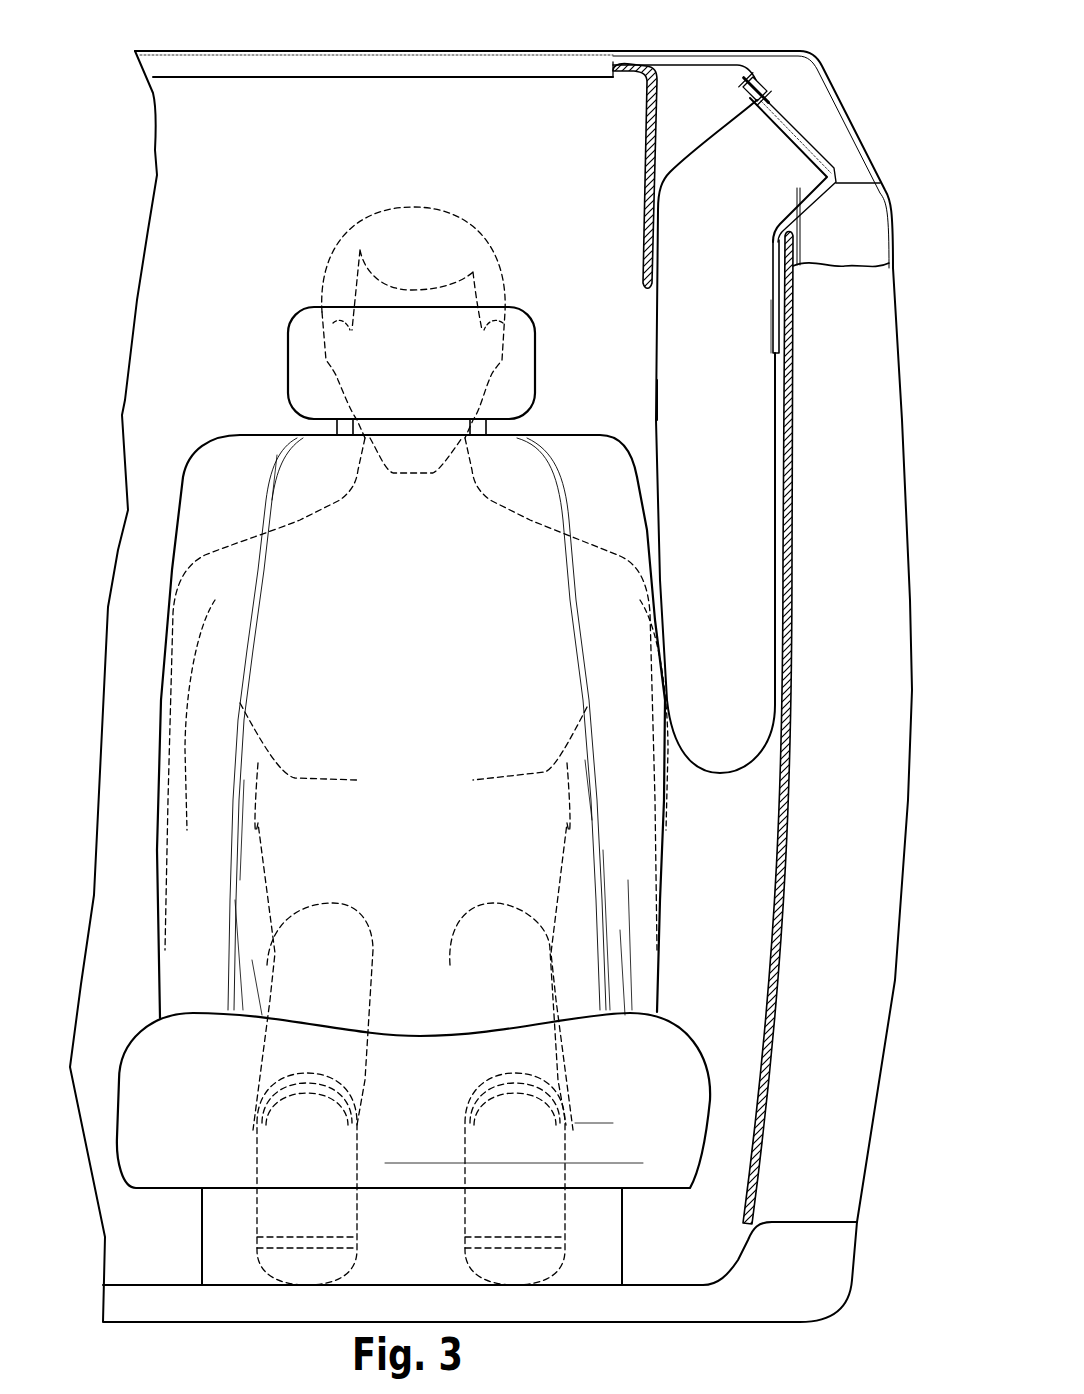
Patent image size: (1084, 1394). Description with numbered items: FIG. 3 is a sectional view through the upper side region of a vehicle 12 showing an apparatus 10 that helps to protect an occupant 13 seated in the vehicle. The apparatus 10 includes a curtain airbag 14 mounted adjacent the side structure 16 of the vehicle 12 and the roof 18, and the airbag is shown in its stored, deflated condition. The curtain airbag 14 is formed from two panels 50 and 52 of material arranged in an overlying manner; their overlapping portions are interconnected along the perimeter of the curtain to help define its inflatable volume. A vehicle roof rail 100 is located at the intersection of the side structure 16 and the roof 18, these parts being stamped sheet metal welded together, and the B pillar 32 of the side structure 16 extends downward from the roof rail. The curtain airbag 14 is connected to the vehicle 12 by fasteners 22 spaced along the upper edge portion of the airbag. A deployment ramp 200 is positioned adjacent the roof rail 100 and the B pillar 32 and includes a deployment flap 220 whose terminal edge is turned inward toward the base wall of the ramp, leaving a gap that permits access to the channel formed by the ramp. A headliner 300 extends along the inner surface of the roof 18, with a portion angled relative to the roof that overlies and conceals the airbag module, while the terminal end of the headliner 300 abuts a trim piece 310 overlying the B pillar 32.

The apparatus 10 is at (754, 613).
The vehicle 12 is at (240, 32).
The occupant 13 is at (298, 633).
The curtain airbag 14 is at (657, 343).
The side structure 16 is at (866, 402).
The roof 18 is at (420, 65).
The fasteners 22 is at (748, 100).
The B pillar 32 is at (845, 240).
The panel 50 is at (774, 322).
The panel 52 is at (654, 404).
The vehicle roof rail 100 is at (864, 126).
The deployment ramp 200 is at (804, 118).
The deployment flap 220 is at (778, 306).
The headliner 300 is at (620, 68).
The trim piece 310 is at (792, 775).